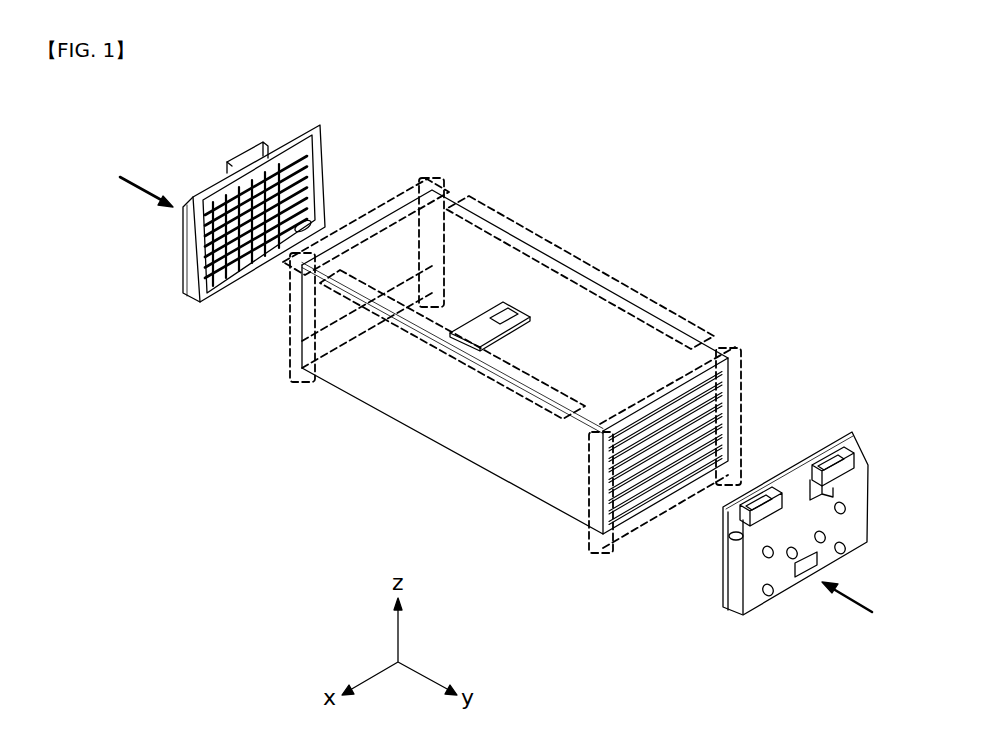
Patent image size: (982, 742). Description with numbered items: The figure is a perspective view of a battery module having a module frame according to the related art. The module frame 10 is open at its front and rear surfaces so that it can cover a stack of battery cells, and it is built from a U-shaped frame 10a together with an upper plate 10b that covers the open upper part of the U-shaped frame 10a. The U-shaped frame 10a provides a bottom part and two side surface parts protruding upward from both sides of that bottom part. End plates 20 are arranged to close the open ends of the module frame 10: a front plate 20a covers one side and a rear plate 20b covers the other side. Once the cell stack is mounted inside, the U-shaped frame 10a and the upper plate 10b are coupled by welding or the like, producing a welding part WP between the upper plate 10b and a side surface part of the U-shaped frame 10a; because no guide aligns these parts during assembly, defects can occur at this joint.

The module frame 10 is at (512, 362).
The U-shaped frame 10a is at (427, 412).
The upper plate 10b is at (588, 360).
The end plates 20 is at (496, 371).
The front plate 20a is at (758, 602).
The rear plate 20b is at (290, 140).
The welding part WP is at (584, 266).